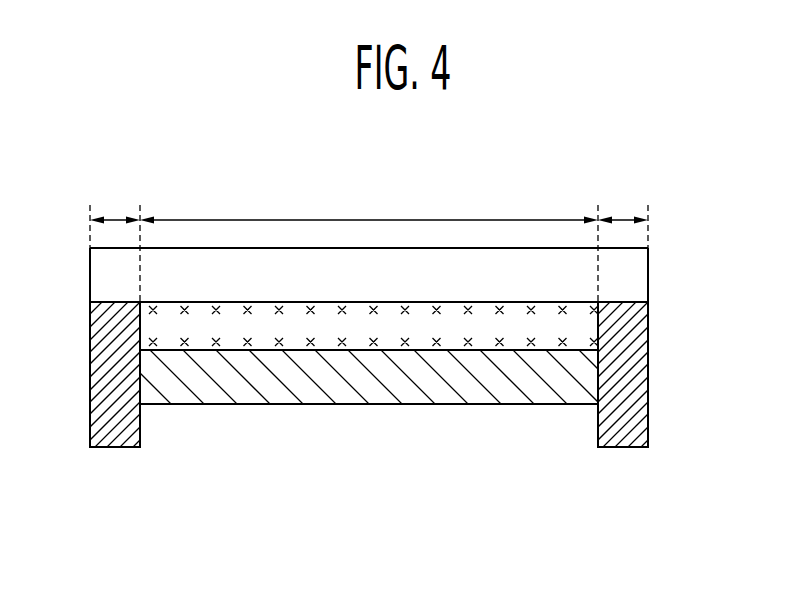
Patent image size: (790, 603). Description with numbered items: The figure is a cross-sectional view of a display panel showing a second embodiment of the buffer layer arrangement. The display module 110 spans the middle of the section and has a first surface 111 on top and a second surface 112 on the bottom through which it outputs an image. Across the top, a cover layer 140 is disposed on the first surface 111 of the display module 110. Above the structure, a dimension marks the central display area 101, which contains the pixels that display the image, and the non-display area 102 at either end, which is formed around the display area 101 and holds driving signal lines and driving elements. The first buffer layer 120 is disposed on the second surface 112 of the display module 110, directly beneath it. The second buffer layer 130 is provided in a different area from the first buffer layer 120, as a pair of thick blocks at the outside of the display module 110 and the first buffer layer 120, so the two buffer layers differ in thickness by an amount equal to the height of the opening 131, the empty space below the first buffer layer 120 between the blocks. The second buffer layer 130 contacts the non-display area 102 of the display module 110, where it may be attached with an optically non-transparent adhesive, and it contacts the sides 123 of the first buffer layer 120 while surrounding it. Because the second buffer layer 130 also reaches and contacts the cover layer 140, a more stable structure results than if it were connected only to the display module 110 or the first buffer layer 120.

The display area 101 is at (369, 244).
The non-display area 102 is at (369, 215).
The display module 110 is at (575, 333).
The first surface 111 is at (157, 302).
The second surface 112 is at (163, 350).
The first buffer layer 120 is at (393, 404).
The sides 123 is at (140, 373).
The second buffer layer 130 is at (643, 434).
The opening 131 is at (296, 464).
The cover layer 140 is at (645, 275).